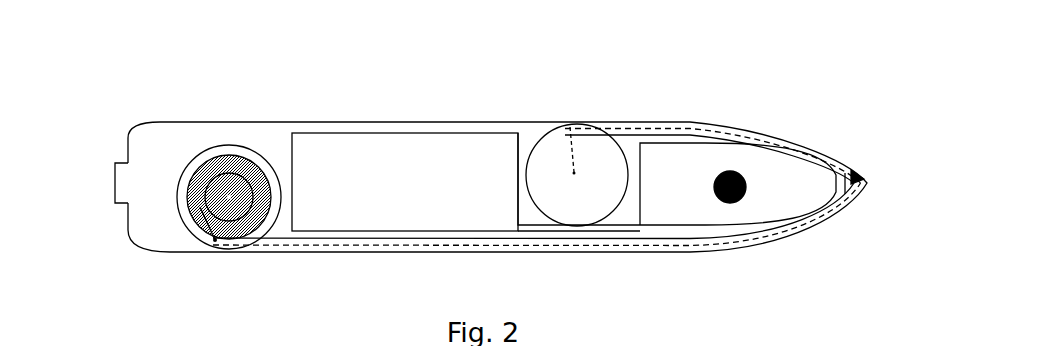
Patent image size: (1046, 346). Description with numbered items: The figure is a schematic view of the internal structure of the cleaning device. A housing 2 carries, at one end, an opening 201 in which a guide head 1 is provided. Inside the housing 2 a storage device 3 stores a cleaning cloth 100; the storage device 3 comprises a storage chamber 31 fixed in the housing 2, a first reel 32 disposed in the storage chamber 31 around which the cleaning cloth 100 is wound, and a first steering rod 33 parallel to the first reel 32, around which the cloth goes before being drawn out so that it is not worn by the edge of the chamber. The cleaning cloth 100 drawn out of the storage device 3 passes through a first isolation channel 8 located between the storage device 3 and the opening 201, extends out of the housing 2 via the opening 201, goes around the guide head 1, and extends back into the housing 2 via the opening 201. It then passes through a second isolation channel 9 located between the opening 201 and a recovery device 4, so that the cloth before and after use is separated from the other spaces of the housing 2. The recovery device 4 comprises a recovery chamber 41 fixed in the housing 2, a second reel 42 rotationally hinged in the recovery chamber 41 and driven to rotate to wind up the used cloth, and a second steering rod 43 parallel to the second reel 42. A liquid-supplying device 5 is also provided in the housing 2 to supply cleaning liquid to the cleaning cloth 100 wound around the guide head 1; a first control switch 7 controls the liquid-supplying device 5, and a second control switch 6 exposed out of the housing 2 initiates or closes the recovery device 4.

The guide head 1 is at (862, 187).
The housing 2 is at (346, 121).
The storage device 3 is at (197, 134).
The storage chamber 31 is at (250, 148).
The first reel 32 is at (229, 190).
The first steering rod 33 is at (215, 240).
The recovery device 4 is at (594, 117).
The recovery chamber 41 is at (620, 150).
The second reel 42 is at (573, 173).
The second steering rod 43 is at (568, 127).
The liquid-supplying device 5 is at (432, 140).
The second control switch 6 is at (115, 180).
The first control switch 7 is at (731, 172).
The first isolation channel 8 is at (534, 252).
The second isolation channel 9 is at (703, 126).
The cleaning cloth 100 is at (340, 245).
The opening 201 is at (860, 170).